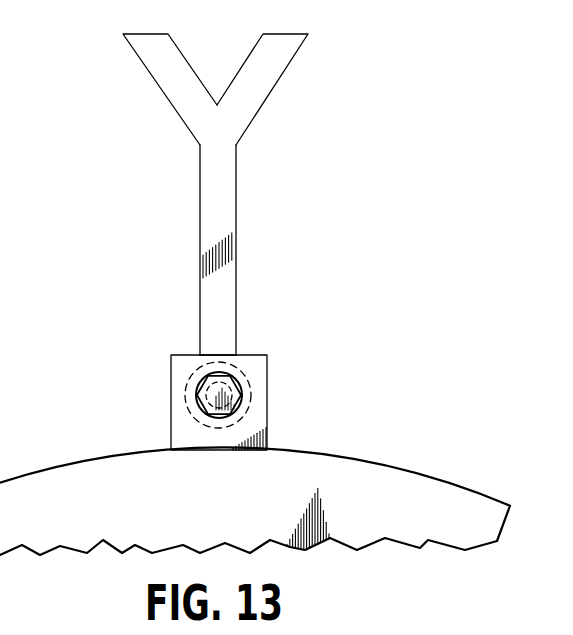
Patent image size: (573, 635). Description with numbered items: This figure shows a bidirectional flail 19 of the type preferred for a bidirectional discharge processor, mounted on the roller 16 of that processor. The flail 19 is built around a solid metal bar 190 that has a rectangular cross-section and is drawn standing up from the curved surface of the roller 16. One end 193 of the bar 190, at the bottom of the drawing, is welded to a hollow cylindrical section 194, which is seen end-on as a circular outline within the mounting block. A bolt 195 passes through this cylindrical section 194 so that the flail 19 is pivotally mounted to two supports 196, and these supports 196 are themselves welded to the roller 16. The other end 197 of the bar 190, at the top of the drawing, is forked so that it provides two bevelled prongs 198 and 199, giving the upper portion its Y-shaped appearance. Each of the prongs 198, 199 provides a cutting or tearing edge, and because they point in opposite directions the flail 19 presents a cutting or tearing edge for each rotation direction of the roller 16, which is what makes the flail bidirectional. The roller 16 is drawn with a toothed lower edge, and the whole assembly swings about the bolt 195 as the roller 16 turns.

The roller 16 is at (407, 472).
The bidirectional flail 19 is at (266, 242).
The solid metal bar 190 is at (228, 194).
The one end of the bar 193 is at (238, 355).
The hollow cylindrical section 194 is at (250, 383).
The bolt 195 is at (241, 405).
The supports 196 is at (171, 392).
The other end of the bar 197 is at (237, 145).
The bevelled prong 198 is at (149, 72).
The bevelled prong 199 is at (286, 68).